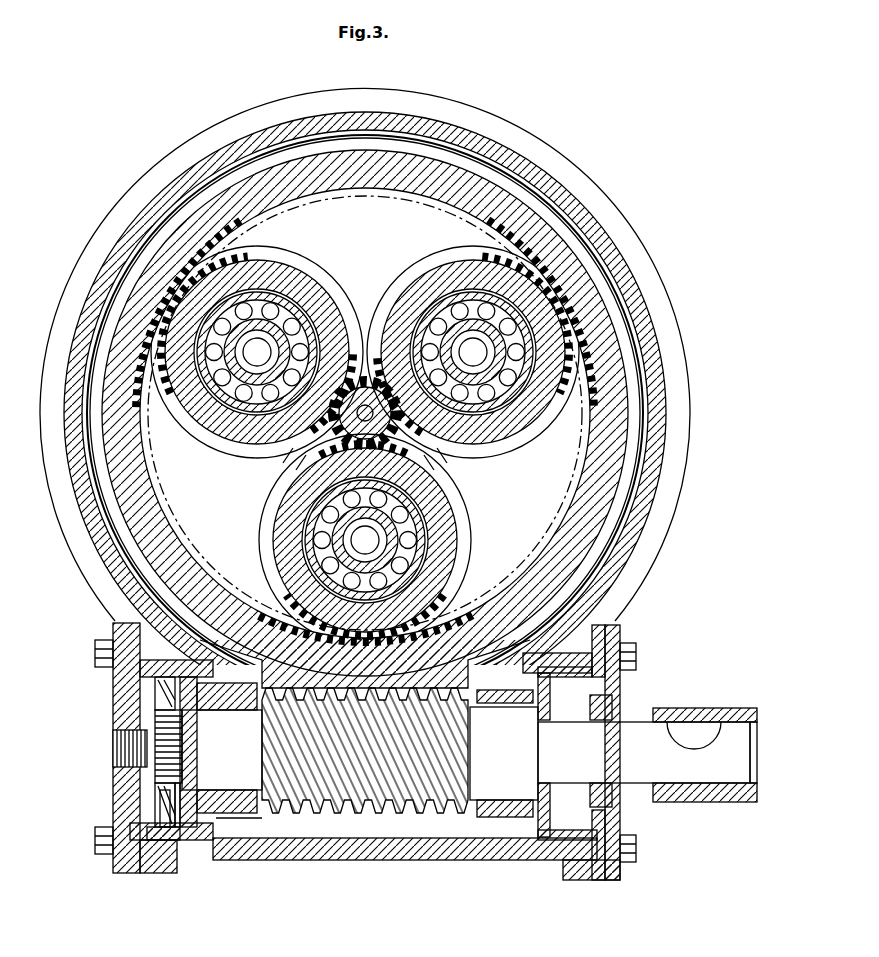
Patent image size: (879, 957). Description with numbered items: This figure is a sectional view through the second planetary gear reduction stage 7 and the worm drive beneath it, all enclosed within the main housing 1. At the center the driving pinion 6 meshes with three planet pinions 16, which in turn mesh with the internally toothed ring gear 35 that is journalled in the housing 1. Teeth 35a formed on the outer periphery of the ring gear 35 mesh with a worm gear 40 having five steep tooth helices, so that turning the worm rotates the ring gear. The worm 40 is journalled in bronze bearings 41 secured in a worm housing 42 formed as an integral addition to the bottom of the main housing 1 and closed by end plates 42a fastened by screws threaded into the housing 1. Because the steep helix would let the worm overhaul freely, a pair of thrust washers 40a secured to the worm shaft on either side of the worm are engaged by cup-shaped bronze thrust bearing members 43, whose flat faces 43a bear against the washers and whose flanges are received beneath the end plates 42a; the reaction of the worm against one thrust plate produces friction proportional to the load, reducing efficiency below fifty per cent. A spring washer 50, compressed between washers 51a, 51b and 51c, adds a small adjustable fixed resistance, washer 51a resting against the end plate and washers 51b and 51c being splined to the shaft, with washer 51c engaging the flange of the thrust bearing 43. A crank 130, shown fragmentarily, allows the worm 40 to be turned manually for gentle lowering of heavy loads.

The main housing 1 is at (670, 432).
The driving pinion 6 is at (368, 396).
The second planetary gear reduction stage 7 is at (335, 312).
The planet pinions 16 is at (248, 440).
The internally toothed ring gear 35 is at (548, 558).
The teeth 35a is at (458, 686).
The worm gear 40 is at (428, 813).
The thrust washers 40a is at (466, 753).
The bronze bearings 41 is at (246, 705).
The worm housing 42 is at (334, 860).
The end plates 42a is at (620, 696).
The thrust bearing members 43 is at (182, 721).
The flat face 43a is at (568, 720).
The spring washer 50 is at (160, 700).
The washer 51a is at (150, 845).
The washer 51b is at (166, 845).
The washer 51c is at (178, 845).
The crank 130 is at (722, 803).